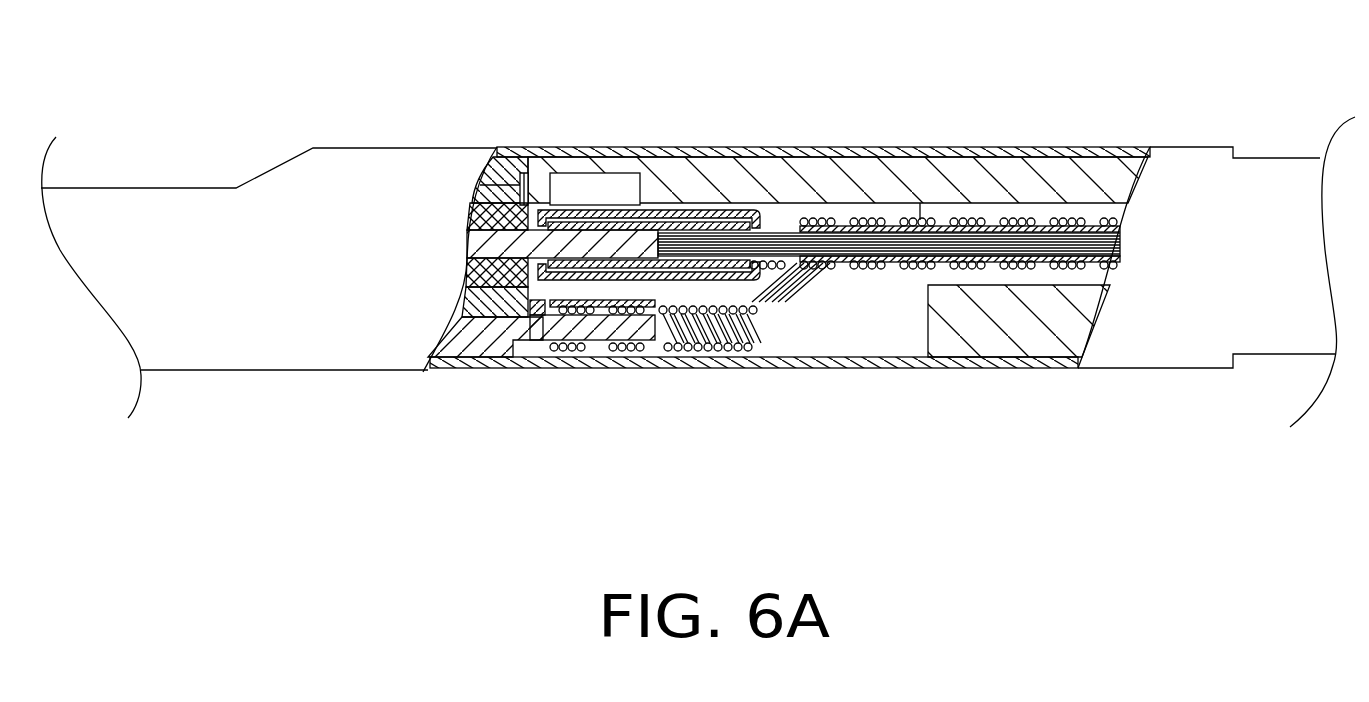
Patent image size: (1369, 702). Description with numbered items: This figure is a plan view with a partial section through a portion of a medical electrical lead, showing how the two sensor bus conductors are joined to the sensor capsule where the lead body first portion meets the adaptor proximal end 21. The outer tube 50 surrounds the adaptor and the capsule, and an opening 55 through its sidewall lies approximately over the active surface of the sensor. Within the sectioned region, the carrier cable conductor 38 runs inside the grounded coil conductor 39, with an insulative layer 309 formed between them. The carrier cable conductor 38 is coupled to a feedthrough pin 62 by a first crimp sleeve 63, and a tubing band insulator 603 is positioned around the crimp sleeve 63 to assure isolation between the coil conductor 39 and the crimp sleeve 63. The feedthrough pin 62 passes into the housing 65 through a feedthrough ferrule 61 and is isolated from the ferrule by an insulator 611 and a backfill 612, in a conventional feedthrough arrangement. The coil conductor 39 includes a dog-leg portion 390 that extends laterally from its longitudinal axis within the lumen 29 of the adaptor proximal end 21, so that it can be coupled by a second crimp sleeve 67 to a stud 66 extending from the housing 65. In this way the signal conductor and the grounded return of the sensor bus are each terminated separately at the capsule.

The adaptor proximal end 21 is at (985, 177).
The lumen 29 is at (965, 280).
The carrier cable conductor 38 is at (768, 224).
The insulative layer 309 is at (788, 224).
The grounded coil conductor 39 is at (862, 224).
The dog-leg portion 390 is at (818, 272).
The outer tube 50 is at (197, 330).
The opening 55 is at (236, 188).
The feedthrough ferrule 61 is at (419, 246).
The insulator 611 is at (465, 221).
The backfill 612 is at (530, 180).
The feedthrough pin 62 is at (470, 318).
The first crimp sleeve 63 is at (640, 218).
The tubing band insulator 603 is at (548, 215).
The housing 65 is at (455, 343).
The stud 66 is at (540, 347).
The second crimp sleeve 67 is at (612, 358).